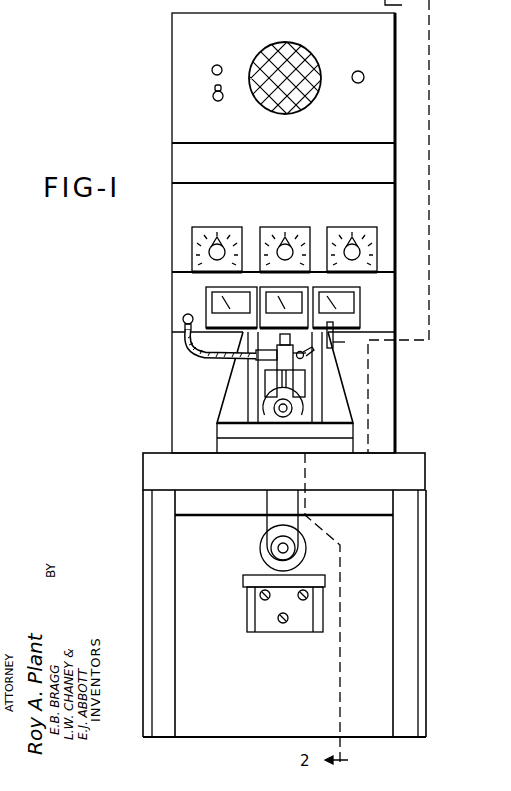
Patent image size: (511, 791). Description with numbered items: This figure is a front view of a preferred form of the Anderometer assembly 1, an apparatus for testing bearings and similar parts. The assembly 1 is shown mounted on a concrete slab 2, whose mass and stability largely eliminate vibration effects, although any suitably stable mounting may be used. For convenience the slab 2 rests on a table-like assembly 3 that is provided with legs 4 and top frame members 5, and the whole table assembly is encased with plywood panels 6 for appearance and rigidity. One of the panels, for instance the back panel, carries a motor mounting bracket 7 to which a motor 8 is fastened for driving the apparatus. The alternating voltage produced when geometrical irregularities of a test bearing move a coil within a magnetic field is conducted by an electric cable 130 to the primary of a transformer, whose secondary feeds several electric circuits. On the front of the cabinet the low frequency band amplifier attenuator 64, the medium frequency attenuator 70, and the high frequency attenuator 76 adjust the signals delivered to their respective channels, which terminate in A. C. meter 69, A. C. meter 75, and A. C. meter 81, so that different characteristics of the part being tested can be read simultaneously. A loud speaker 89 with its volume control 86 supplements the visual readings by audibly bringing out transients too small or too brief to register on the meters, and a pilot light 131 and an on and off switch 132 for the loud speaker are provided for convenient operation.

The Anderometer assembly 1 is at (398, 210).
The concrete slab 2 is at (388, 470).
The table-like assembly 3 is at (143, 497).
The legs 4 is at (160, 622).
The top frame members 5 is at (373, 508).
The plywood panels 6 is at (152, 570).
The motor mounting bracket 7 is at (293, 620).
The motor 8 is at (262, 552).
The low frequency band amplifier attenuator 64 is at (210, 227).
The A. C. meter 69 is at (212, 303).
The attenuator 70 is at (268, 227).
The A. C. meter 75 is at (285, 290).
The attenuator 76 is at (331, 227).
The A. C. meter 81 is at (353, 302).
The volume control 86 is at (354, 71).
The loud speaker 89 is at (300, 47).
The electric cable 130 is at (196, 357).
The pilot light 131 is at (212, 66).
The on and off switch 132 is at (213, 95).